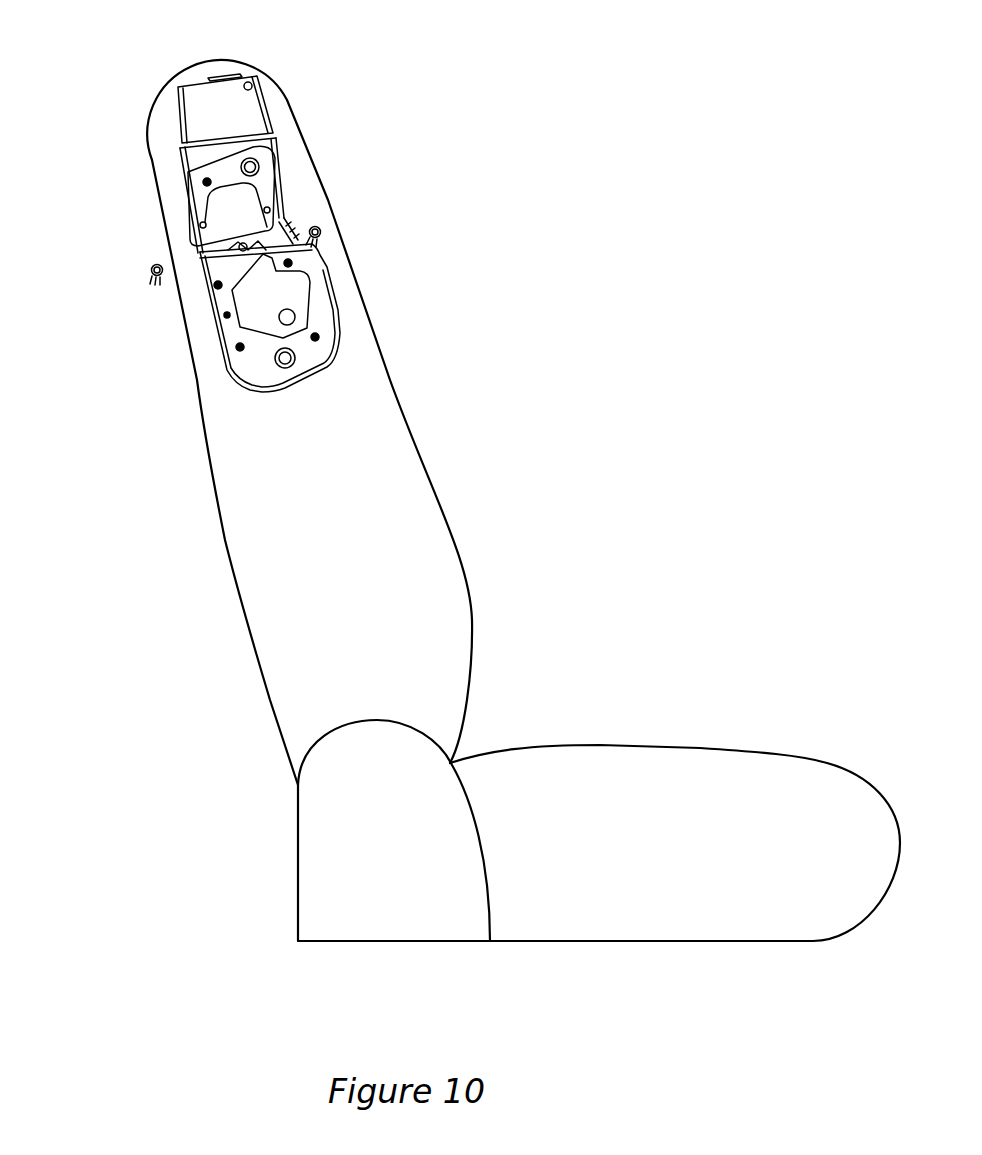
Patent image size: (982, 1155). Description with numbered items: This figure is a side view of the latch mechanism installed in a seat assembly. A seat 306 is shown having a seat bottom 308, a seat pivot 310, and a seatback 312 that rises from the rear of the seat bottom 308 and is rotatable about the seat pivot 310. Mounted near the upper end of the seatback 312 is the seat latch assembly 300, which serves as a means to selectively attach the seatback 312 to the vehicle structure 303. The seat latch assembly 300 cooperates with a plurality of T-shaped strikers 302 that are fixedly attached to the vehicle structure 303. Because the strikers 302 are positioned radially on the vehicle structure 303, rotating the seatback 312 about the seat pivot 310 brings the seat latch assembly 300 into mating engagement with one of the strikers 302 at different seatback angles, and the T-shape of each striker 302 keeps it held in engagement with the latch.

The seat latch assembly 300 is at (296, 176).
The striker 302 is at (142, 253).
The vehicle structure 303 is at (150, 283).
The seat 306 is at (228, 784).
The seat bottom 308 is at (755, 798).
The seat pivot 310 is at (422, 798).
The seatback 312 is at (350, 458).